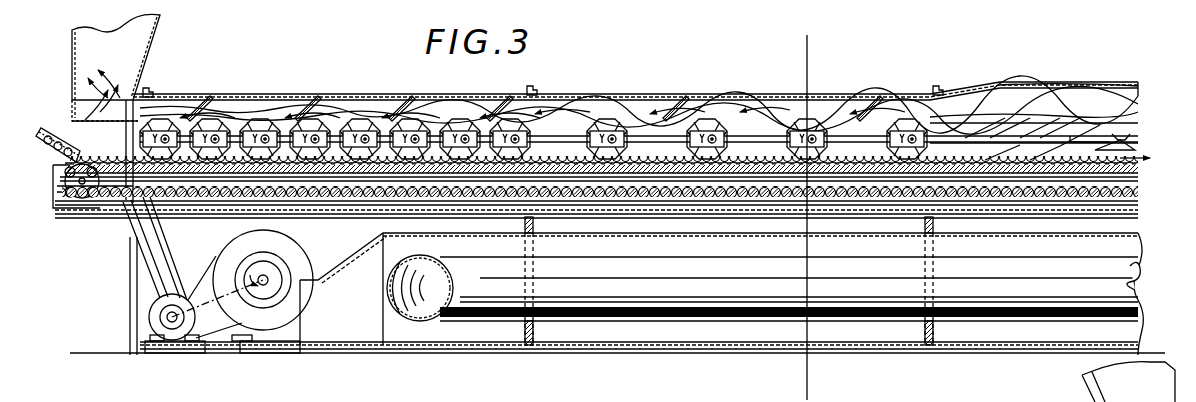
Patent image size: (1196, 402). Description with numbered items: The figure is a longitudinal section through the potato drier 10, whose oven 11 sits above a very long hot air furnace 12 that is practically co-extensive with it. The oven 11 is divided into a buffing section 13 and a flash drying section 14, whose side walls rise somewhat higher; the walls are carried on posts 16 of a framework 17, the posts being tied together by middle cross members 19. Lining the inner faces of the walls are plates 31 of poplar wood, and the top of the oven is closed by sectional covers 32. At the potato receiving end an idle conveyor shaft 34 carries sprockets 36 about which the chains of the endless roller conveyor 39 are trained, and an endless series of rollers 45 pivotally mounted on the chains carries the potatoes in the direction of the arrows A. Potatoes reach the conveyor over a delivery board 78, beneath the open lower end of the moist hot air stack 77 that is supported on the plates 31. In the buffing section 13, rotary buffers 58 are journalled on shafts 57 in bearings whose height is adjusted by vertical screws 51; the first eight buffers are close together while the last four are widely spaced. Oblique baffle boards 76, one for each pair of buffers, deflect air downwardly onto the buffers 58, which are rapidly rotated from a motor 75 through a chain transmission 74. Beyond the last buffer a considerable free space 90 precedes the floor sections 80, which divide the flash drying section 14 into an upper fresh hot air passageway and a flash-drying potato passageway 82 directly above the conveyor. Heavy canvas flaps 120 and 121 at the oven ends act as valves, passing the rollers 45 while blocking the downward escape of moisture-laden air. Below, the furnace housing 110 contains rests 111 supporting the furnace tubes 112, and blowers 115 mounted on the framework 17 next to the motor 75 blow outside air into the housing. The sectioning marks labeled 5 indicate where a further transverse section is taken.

The drier 10 is at (975, 44).
The oven 11 is at (1105, 90).
The hot air furnace 12 is at (665, 340).
The buffing section 13 is at (628, 96).
The flash drying section 14 is at (1085, 83).
The posts 16 is at (134, 292).
The framework 17 is at (128, 329).
The middle cross members 19 is at (537, 226).
The plates 31 is at (775, 106).
The sectional covers 32 is at (552, 97).
The idle conveyor shaft 34 is at (72, 192).
The sprockets 36 is at (100, 196).
The endless roller conveyor 39 is at (735, 196).
The rollers 45 is at (882, 198).
The vertical screws 51 is at (152, 90).
The shafts 57 is at (356, 128).
The rotary buffers 58 is at (215, 118).
The chain transmission 74 is at (146, 274).
The motor 75 is at (150, 315).
The baffle boards 76 is at (195, 104).
The moist hot air stack 77 is at (150, 52).
The delivery board 78 is at (60, 131).
The floor sections 80 is at (1100, 136).
The flash-drying potato passageway 82 is at (1115, 148).
The free space 90 is at (1003, 138).
The housing 110 is at (718, 350).
The rests 111 is at (537, 332).
The furnace tubes 112 is at (1142, 279).
The blowers 115 is at (290, 250).
The canvas flap 120 is at (162, 212).
The canvas flap 121 is at (128, 203).
The section line 5- 5 is at (800, 44).
The arrows A is at (1133, 156).